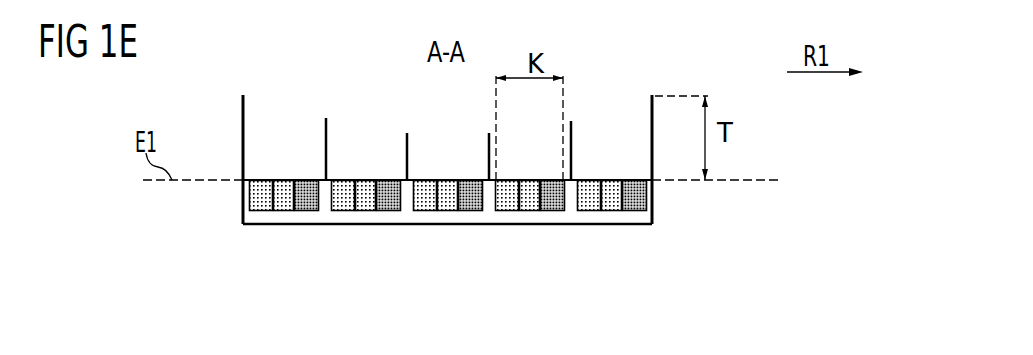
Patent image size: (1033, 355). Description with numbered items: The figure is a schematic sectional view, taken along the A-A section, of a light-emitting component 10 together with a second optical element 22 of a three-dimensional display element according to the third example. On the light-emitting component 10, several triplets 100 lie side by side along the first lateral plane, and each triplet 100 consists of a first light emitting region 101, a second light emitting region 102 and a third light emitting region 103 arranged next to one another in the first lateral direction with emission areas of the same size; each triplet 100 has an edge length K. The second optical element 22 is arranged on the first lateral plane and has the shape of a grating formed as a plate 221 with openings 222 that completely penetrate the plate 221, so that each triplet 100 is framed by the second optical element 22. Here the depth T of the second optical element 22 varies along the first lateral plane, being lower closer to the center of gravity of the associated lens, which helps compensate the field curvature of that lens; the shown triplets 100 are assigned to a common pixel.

The light-emitting component 10 is at (642, 222).
The second optical element 22 is at (243, 143).
The plate 221 is at (326, 118).
The openings 222 is at (620, 92).
The triplet 100 is at (448, 255).
The first light emitting region 101 is at (505, 212).
The second light emitting region 102 is at (532, 212).
The third light emitting region 103 is at (569, 233).